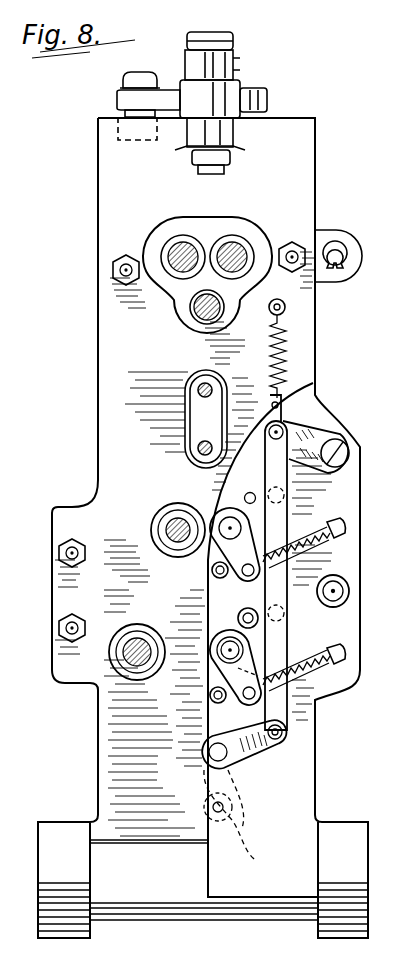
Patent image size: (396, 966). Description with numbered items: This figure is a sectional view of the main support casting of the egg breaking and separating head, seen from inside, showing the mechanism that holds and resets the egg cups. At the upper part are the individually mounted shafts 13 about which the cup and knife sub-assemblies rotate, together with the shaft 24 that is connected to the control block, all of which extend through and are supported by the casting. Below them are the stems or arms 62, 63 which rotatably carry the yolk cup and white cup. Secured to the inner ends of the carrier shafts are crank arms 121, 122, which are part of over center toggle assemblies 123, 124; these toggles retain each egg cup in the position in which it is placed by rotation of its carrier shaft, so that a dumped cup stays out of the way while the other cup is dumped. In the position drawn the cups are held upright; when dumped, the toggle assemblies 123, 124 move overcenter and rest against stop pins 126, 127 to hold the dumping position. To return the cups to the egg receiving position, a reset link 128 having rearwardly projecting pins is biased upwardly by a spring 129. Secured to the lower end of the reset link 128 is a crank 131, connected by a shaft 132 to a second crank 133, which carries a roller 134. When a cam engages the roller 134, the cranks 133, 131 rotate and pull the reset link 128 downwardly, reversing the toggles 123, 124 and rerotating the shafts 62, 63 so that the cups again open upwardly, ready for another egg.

The individually mounted shaft 13 is at (231, 253).
The shaft 24 is at (200, 312).
The stem or arm 62 is at (166, 527).
The stem or arm 63 is at (138, 640).
The crank arm 121 is at (216, 490).
The crank arm 122 is at (227, 673).
The over center toggle assembly 123 is at (300, 537).
The over center toggle assembly 124 is at (310, 692).
The stop pin 126 is at (250, 492).
The stop pin 127 is at (240, 612).
The reset link 128 is at (274, 641).
The spring 129 is at (286, 348).
The crank 131 is at (251, 765).
The shaft 132 is at (213, 750).
The second crank 133 is at (245, 822).
The roller 134 is at (246, 820).